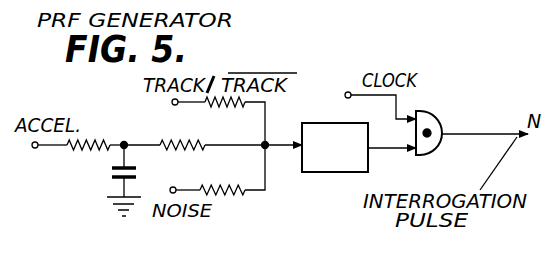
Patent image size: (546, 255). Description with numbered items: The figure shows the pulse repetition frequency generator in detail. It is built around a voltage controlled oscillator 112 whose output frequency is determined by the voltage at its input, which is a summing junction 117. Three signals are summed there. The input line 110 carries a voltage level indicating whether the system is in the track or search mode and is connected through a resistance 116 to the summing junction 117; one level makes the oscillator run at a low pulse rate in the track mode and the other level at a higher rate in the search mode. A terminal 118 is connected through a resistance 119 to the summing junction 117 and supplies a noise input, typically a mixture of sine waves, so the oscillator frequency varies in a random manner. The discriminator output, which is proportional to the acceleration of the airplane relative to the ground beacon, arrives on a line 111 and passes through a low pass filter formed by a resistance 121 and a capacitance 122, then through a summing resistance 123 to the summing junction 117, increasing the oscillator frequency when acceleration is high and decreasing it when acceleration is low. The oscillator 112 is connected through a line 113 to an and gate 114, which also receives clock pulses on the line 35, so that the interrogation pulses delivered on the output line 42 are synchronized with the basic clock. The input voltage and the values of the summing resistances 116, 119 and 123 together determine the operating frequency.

The line 111 is at (54, 142).
The resistance 121 is at (104, 144).
The capacitance 122 is at (112, 170).
The input line 110 is at (180, 104).
The resistance 116 is at (231, 121).
The summing junction 117 is at (264, 145).
The terminal 118 is at (176, 186).
The summing resistance 123 is at (203, 149).
The resistance 119 is at (246, 192).
The line 35 is at (368, 98).
The voltage controlled oscillator 112 is at (338, 173).
The line 113 is at (382, 153).
The and gate 114 is at (437, 148).
The output line 42 is at (486, 108).